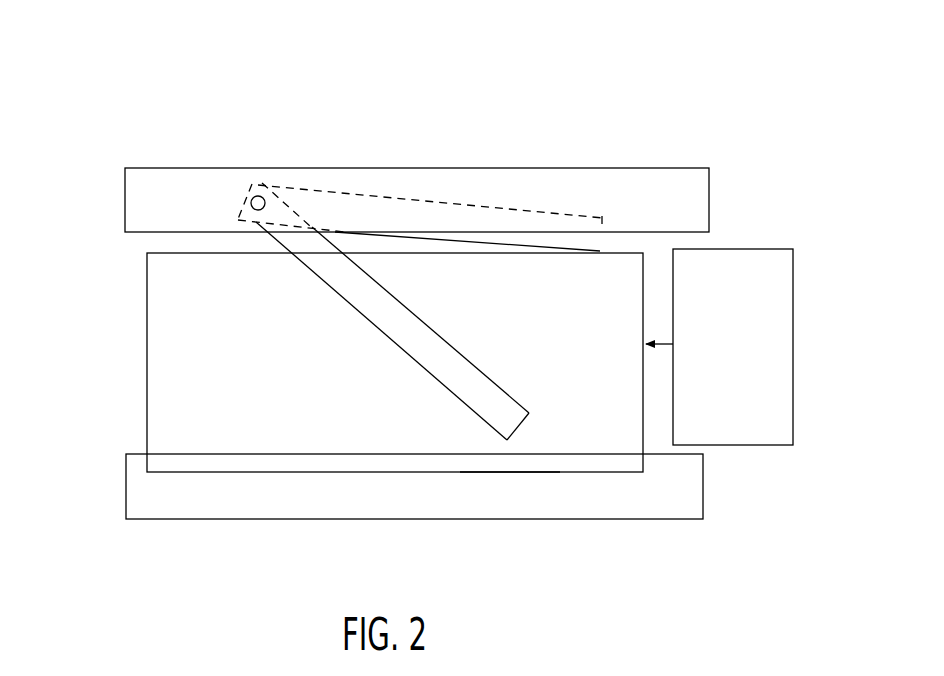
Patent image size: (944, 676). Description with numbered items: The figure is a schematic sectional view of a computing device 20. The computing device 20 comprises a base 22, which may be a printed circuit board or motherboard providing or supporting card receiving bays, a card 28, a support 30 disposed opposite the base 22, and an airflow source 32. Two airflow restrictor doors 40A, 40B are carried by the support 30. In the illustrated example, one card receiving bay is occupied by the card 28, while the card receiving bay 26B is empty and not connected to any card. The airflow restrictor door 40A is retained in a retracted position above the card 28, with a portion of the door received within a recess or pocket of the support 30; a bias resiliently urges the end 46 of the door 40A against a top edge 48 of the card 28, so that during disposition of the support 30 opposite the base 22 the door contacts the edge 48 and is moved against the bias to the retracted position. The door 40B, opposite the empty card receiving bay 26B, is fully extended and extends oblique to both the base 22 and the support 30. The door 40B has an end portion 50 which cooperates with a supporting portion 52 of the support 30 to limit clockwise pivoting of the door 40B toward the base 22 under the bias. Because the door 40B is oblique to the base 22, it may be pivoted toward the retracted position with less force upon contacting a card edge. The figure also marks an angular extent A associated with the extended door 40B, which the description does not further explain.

The computing device 20 is at (470, 114).
The base 22 is at (243, 519).
The card receiving bay 26B is at (497, 473).
The card 28 is at (296, 367).
The support 30 is at (125, 203).
The airflow source 32 is at (767, 446).
The airflow restrictor door 40A is at (550, 214).
The airflow restrictor door 40B is at (418, 350).
The end 46 is at (606, 242).
The top edge 48 is at (602, 233).
The end portion 50 is at (277, 239).
The supporting portion 52 is at (253, 202).
The angle A is at (513, 237).